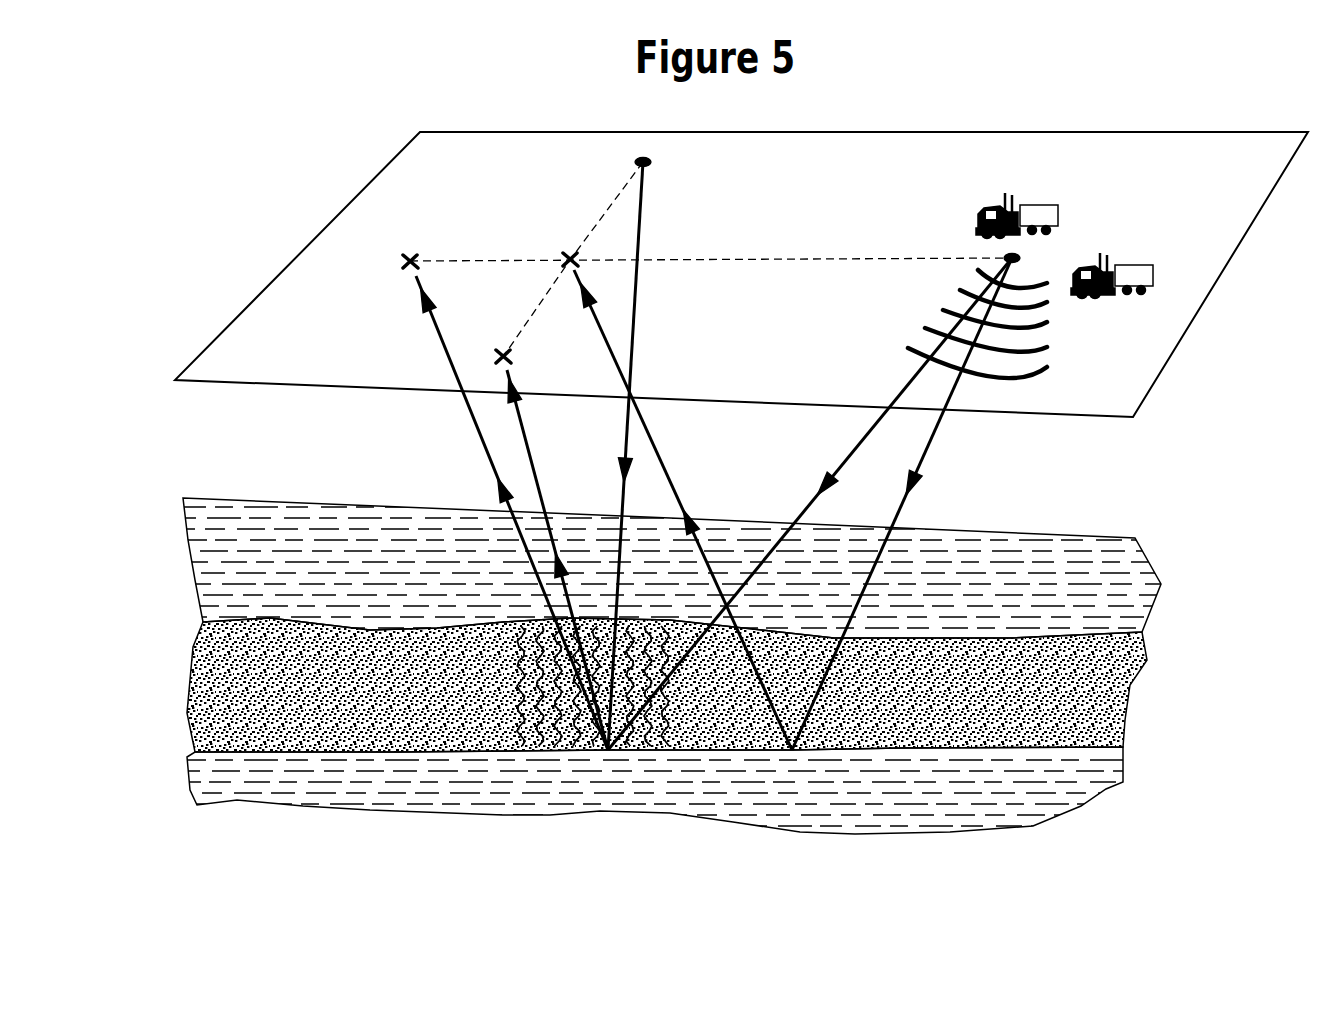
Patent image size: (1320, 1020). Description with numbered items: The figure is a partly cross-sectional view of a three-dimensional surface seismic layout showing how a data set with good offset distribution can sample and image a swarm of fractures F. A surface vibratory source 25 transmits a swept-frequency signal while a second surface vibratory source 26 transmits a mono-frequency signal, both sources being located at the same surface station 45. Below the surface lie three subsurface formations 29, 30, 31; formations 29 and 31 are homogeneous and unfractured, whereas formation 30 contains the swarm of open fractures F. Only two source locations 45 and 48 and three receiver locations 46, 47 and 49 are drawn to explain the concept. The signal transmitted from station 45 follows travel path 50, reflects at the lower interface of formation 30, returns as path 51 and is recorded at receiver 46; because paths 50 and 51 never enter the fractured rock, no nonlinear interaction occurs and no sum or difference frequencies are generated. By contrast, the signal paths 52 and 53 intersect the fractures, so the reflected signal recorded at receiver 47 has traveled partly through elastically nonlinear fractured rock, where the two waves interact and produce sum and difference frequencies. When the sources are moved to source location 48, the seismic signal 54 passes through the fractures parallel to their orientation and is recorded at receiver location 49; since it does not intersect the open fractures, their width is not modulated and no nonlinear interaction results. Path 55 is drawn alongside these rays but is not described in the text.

The surface vibratory source 25 is at (1025, 206).
The surface vibratory source 26 is at (1125, 265).
The subsurface formation 29 is at (672, 568).
The subsurface formation 30 is at (667, 685).
The subsurface formation 31 is at (672, 790).
The source location 45 is at (987, 310).
The receiver location 46 is at (559, 239).
The receiver location 47 is at (410, 240).
The source location 48 is at (666, 162).
The receiver location 49 is at (497, 337).
The travel path of transmitted seismic signal 50 is at (902, 504).
The travel path of reflected seismic signal 51 is at (683, 510).
The signal path 52 is at (810, 504).
The signal path 53 is at (512, 513).
The seismic signal 54 is at (612, 456).
The reflected seismic ray 55 is at (557, 560).
The swarm of open fractures F is at (578, 745).